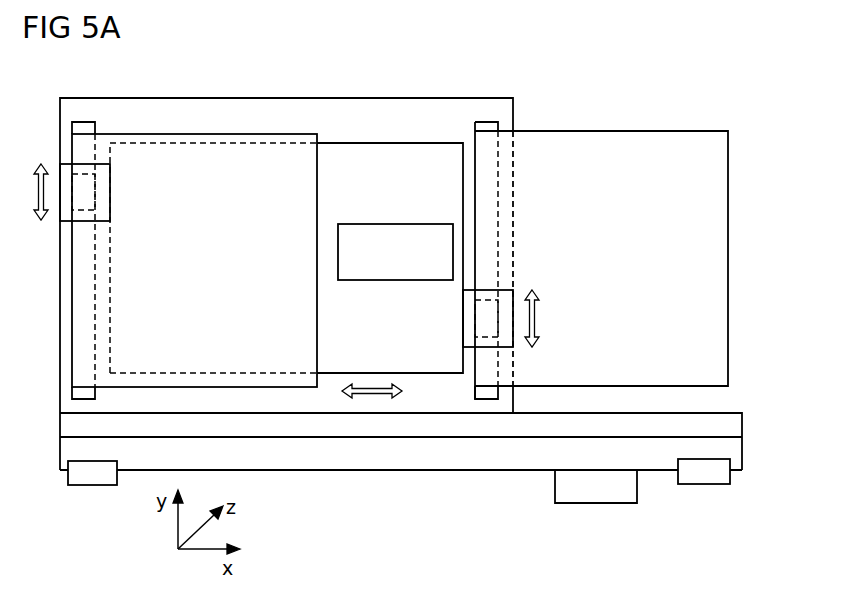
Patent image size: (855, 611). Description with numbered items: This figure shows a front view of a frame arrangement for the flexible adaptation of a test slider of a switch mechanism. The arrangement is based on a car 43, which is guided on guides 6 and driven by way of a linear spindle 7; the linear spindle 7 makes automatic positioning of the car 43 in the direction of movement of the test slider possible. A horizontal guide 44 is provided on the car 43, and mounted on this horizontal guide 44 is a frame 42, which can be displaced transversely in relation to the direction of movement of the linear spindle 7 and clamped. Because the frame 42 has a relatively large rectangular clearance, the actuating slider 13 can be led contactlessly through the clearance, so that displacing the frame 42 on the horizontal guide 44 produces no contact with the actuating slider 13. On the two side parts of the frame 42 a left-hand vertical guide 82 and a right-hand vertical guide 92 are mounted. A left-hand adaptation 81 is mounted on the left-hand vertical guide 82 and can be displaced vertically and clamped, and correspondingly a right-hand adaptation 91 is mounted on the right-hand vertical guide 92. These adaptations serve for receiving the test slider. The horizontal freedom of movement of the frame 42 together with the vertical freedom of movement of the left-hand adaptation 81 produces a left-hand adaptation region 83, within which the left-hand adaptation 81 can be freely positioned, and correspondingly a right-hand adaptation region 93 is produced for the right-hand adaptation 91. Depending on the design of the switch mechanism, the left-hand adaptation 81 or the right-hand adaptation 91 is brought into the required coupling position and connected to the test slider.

The frame 42 is at (258, 106).
The left-hand adaptation region 83 is at (177, 160).
The left-hand adaptation 81 is at (88, 192).
The left-hand vertical guide 82 is at (80, 392).
The actuating slider 13 is at (397, 233).
The right-hand adaptation region 93 is at (598, 160).
The right-hand adaptation 91 is at (483, 322).
The right-hand vertical guide 92 is at (483, 395).
The horizontal guide 44 is at (742, 424).
The car 43 is at (305, 470).
The guides 6 is at (91, 475).
The linear spindle 7 is at (595, 490).